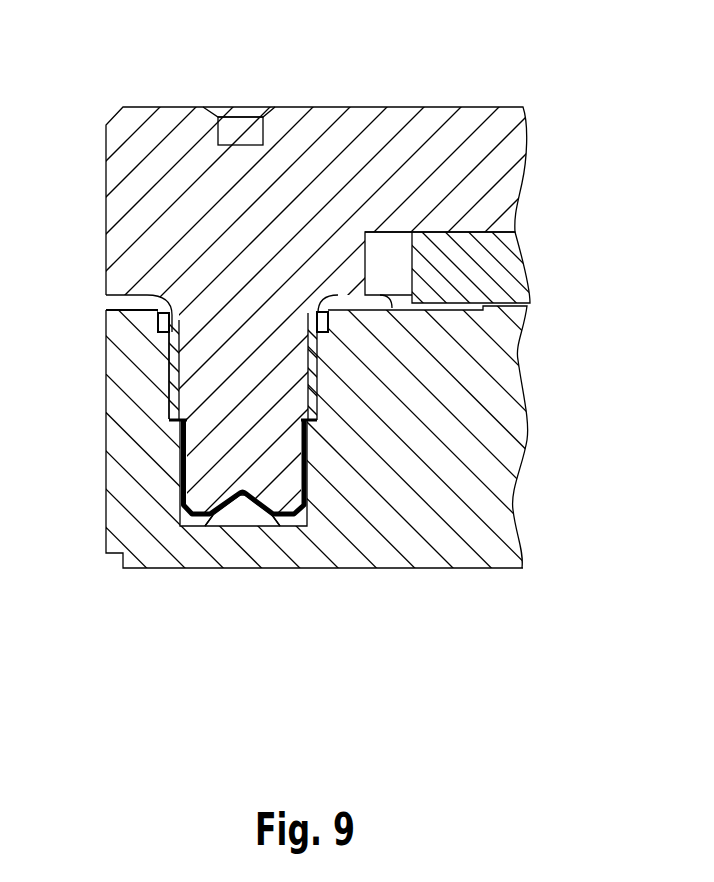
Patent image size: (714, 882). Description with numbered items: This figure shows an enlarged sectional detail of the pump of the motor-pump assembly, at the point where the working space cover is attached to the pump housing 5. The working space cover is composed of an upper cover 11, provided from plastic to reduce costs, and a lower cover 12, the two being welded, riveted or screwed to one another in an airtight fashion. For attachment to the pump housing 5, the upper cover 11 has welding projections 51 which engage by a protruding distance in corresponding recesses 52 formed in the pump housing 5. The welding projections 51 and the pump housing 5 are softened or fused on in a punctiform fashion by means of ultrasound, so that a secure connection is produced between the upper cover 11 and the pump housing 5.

The upper cover 11 is at (329, 152).
The lower cover 12 is at (490, 267).
The pump housing 5 is at (368, 500).
The welding projections 51 is at (213, 451).
The recesses 52 is at (186, 517).